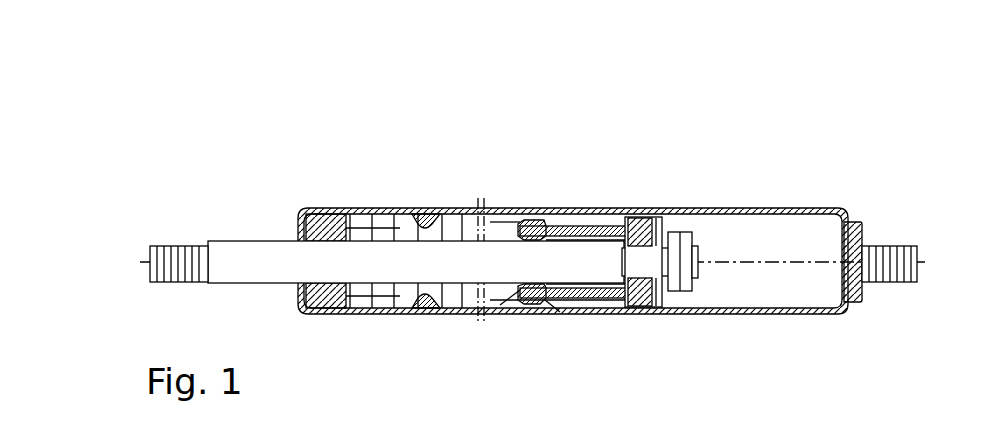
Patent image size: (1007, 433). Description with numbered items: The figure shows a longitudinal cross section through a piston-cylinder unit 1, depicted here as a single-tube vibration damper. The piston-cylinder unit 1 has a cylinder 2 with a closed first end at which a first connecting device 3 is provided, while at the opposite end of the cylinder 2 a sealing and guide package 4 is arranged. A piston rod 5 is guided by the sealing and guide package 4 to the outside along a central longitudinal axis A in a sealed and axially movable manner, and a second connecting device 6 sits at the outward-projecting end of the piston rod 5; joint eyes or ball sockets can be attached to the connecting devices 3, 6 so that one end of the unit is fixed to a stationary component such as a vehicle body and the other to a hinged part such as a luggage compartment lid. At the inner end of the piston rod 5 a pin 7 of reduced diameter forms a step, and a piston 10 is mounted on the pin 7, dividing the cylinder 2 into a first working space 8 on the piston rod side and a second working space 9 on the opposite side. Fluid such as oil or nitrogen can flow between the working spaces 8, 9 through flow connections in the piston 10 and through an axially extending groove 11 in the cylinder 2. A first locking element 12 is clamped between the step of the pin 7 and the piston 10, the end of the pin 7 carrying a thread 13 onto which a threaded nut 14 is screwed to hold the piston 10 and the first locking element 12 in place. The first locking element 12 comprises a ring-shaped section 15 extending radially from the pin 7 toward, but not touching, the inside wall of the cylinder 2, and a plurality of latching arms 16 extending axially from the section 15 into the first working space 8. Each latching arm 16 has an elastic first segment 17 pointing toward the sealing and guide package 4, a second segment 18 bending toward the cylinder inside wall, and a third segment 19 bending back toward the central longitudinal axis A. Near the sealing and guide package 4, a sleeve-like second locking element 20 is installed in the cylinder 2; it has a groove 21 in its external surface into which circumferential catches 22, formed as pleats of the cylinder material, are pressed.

The piston-cylinder unit 1 is at (911, 103).
The cylinder 2 is at (803, 313).
The first connecting device 3 is at (907, 246).
The sealing and guide package 4 is at (371, 342).
The piston rod 5 is at (244, 248).
The second connecting device 6 is at (171, 246).
The pin 7 is at (677, 212).
The first working space 8 is at (461, 218).
The second working space 9 is at (798, 212).
The piston 10 is at (650, 352).
The groove 11 is at (514, 313).
The first locking element 12 is at (580, 162).
The thread 13 is at (732, 212).
The threaded nut 14 is at (700, 313).
The ring-shaped section 15 is at (611, 210).
The latching arms 16 is at (576, 313).
The first segment 17 is at (612, 313).
The second segment 18 is at (553, 313).
The third segment 19 is at (512, 316).
The second locking element 20 is at (422, 214).
The groove 21 is at (441, 314).
The circumferential catches 22 is at (432, 216).
The central longitudinal axis A is at (148, 262).